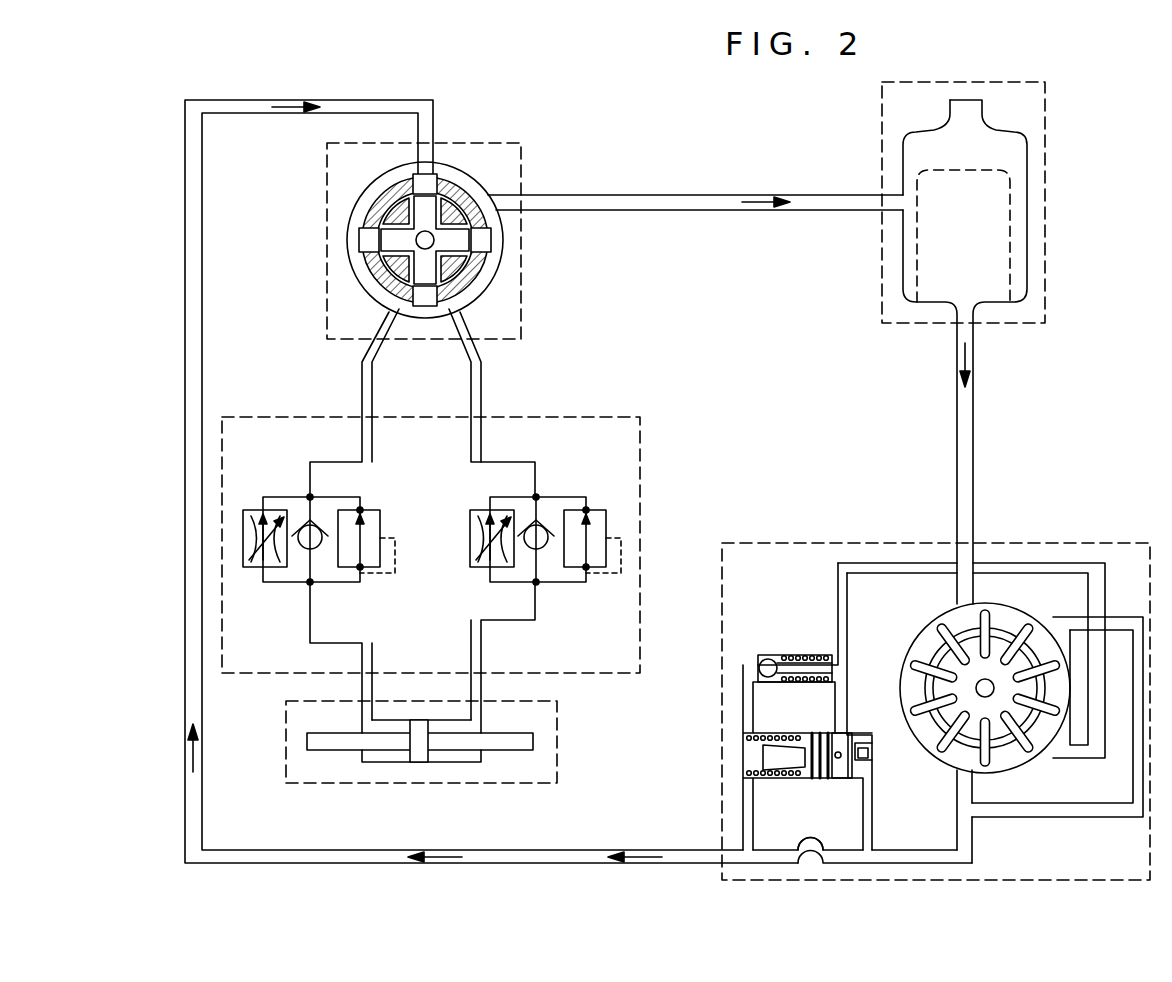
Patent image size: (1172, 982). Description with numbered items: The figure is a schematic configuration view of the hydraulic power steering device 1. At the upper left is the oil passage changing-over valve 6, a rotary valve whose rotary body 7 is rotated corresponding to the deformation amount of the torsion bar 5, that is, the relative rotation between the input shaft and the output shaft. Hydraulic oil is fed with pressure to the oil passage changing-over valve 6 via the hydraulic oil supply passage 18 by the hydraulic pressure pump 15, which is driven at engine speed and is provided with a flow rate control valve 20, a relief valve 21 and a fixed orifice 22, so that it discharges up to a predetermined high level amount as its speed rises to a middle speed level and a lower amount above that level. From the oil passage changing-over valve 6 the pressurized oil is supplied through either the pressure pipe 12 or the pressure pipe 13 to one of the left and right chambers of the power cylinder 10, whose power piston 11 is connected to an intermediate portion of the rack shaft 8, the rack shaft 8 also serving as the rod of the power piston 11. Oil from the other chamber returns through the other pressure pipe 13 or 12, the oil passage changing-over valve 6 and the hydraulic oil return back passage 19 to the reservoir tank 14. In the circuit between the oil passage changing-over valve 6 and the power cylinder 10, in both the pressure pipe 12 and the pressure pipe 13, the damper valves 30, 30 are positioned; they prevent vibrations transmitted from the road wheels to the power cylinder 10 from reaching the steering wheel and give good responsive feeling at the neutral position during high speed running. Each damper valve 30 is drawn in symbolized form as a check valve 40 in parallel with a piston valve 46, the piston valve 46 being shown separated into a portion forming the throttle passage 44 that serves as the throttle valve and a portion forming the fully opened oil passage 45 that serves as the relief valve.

The hydraulic power steering device 1 is at (674, 158).
The torsion bar 5 is at (378, 240).
The oil passage changing-over valve 6 is at (490, 140).
The rotary body 7 is at (468, 240).
The rack shaft 8 is at (330, 752).
The power cylinder 10 is at (558, 746).
The power piston 11 is at (420, 764).
The pressure pipe 12 is at (362, 398).
The pressure pipe 13 is at (482, 382).
The reservoir tank 14 is at (1048, 232).
The hydraulic pressure pump 15 is at (1062, 540).
The hydraulic oil supply passage 18 is at (203, 303).
The hydraulic oil return back passage 19 is at (705, 212).
The flow rate control valve 20 is at (787, 780).
The relief valve 21 is at (790, 655).
The fixed orifice 22 is at (812, 848).
The damper valve 30 is at (622, 412).
The check valve 40 is at (300, 510).
The throttle passage 44 is at (256, 570).
The fully opened oil passage 45 is at (383, 527).
The piston valve 46 is at (362, 490).